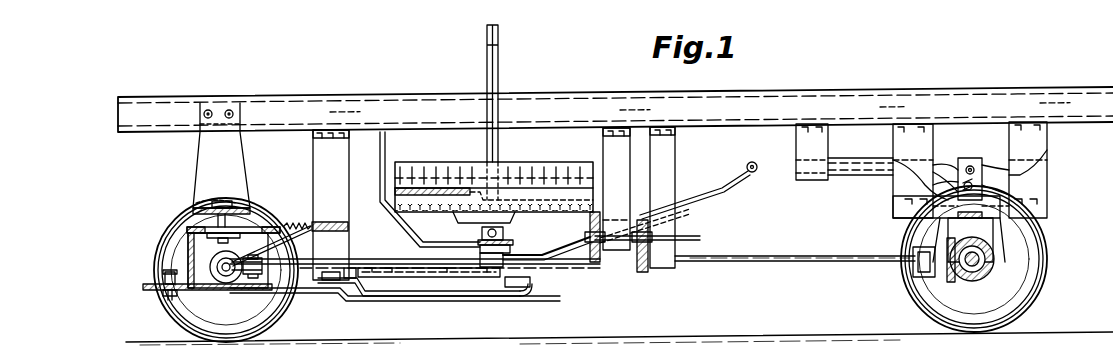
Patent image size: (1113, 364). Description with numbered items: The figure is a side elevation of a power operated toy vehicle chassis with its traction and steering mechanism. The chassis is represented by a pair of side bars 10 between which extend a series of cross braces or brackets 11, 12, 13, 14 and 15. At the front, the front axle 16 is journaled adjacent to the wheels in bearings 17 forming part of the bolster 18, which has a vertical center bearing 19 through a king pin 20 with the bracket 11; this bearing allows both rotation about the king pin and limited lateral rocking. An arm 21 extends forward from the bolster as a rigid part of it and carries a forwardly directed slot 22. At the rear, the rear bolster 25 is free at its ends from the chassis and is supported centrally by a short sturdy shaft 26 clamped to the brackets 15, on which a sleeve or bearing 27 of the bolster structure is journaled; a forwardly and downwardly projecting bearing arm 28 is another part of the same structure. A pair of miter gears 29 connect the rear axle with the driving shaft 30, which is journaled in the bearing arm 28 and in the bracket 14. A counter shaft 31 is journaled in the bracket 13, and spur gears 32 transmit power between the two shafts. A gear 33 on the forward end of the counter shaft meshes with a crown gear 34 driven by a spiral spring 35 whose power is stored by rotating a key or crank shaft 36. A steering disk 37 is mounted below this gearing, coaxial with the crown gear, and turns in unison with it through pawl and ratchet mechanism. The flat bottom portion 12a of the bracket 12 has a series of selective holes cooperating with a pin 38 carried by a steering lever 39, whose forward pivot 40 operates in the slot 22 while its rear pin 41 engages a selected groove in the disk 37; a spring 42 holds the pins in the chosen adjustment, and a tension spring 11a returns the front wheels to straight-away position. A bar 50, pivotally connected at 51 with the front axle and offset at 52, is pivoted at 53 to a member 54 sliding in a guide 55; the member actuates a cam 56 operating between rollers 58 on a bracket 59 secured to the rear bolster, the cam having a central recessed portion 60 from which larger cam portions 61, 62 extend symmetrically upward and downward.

The side bars 10 is at (292, 112).
The cross bracket 11 is at (220, 143).
The tension spring 11a is at (316, 224).
The cross bracket 12 is at (328, 160).
The bottom portion of bracket 12a is at (332, 282).
The cross bracket 13 is at (608, 150).
The cross bracket 14 is at (665, 152).
The cross brackets 15 is at (1005, 140).
The front axle 16 is at (290, 224).
The bearings 17 is at (240, 258).
The bolster 18 is at (188, 242).
The vertical center bearing 19 is at (222, 230).
The king pin 20 is at (215, 204).
The arm 21 is at (165, 283).
The slot 22 is at (150, 290).
The rear bolster 25 is at (1000, 232).
The shaft 26 is at (1030, 228).
The sleeve or bearing 27 is at (893, 206).
The bearing arm 28 is at (915, 252).
The miter gears 29 is at (965, 282).
The driving shaft 30 is at (772, 264).
The counter shaft 31 is at (660, 237).
The spur gears 32 is at (643, 274).
The gear 33 is at (598, 262).
The crown gear 34 is at (560, 214).
The spiral spring 35 is at (440, 185).
The key or crank shaft 36 is at (499, 66).
The steering disk 37 is at (505, 265).
The pin 38 is at (343, 270).
The steering lever 39 is at (430, 300).
The pivot 40 is at (172, 298).
The pin 41 is at (520, 288).
The spring 42 is at (352, 280).
The bar 50 is at (421, 300).
The pivotal connection 51 is at (262, 272).
The offset 52 is at (560, 260).
The pivotal connection 53 is at (746, 165).
The member 54 is at (843, 170).
The guide 55 is at (812, 145).
The cam 56 is at (1009, 170).
The rollers 58 is at (1045, 150).
The bracket 59 is at (1025, 150).
The central recessed portion 60 is at (893, 182).
The cam portion 61 is at (910, 140).
The cam portion 62 is at (1011, 186).